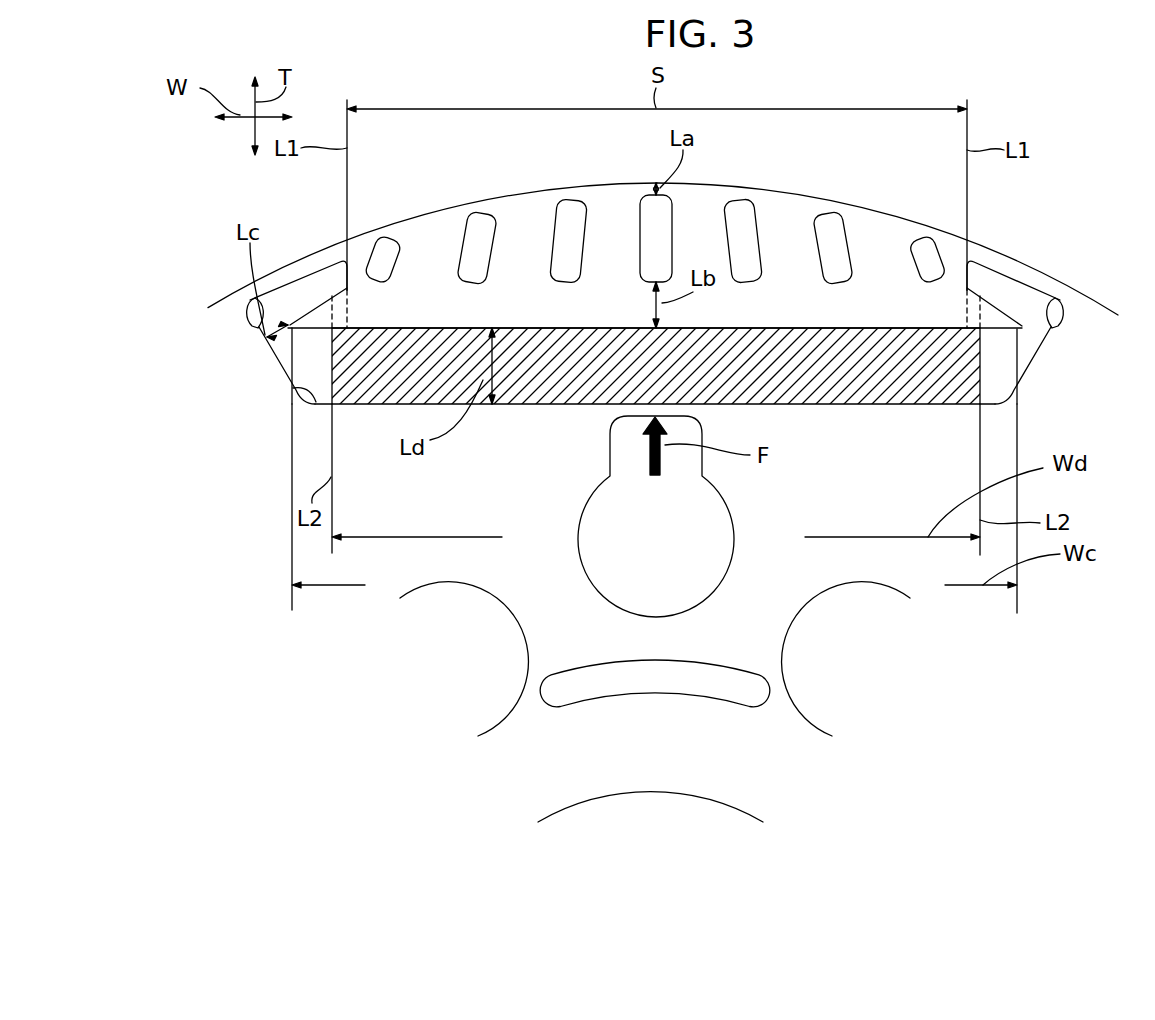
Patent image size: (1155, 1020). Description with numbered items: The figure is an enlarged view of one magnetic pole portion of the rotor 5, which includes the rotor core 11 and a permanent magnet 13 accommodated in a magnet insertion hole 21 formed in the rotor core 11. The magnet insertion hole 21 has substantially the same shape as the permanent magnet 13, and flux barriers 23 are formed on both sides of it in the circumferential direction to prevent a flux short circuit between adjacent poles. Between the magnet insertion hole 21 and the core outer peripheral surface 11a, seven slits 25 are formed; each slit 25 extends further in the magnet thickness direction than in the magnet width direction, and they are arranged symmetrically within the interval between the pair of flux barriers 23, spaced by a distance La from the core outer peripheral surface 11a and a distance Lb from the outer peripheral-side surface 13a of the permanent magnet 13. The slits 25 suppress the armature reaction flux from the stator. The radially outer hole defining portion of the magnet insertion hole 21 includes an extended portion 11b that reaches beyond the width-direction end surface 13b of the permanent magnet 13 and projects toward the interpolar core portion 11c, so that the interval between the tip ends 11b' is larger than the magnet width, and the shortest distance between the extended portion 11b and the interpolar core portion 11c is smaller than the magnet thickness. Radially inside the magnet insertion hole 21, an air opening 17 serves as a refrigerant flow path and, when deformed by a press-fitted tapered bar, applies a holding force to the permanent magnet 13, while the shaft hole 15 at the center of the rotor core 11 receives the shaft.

The rotor 5 is at (185, 181).
The rotor core 11 is at (430, 230).
The core outer peripheral surface 11a is at (778, 190).
The extended portion 11b is at (705, 279).
The tip end of extended portion 11b' is at (665, 290).
The interpolar core portion 11c is at (258, 303).
The permanent magnet 13 is at (862, 375).
The outer peripheral-side surface of permanent magnet 13a is at (613, 328).
The width-direction end surface 13b is at (332, 362).
The shaft hole 15 is at (720, 817).
The air opening 17 is at (578, 528).
The magnet insertion hole 21 is at (292, 388).
The flux barrier 23 is at (297, 292).
The slit 25 is at (573, 230).